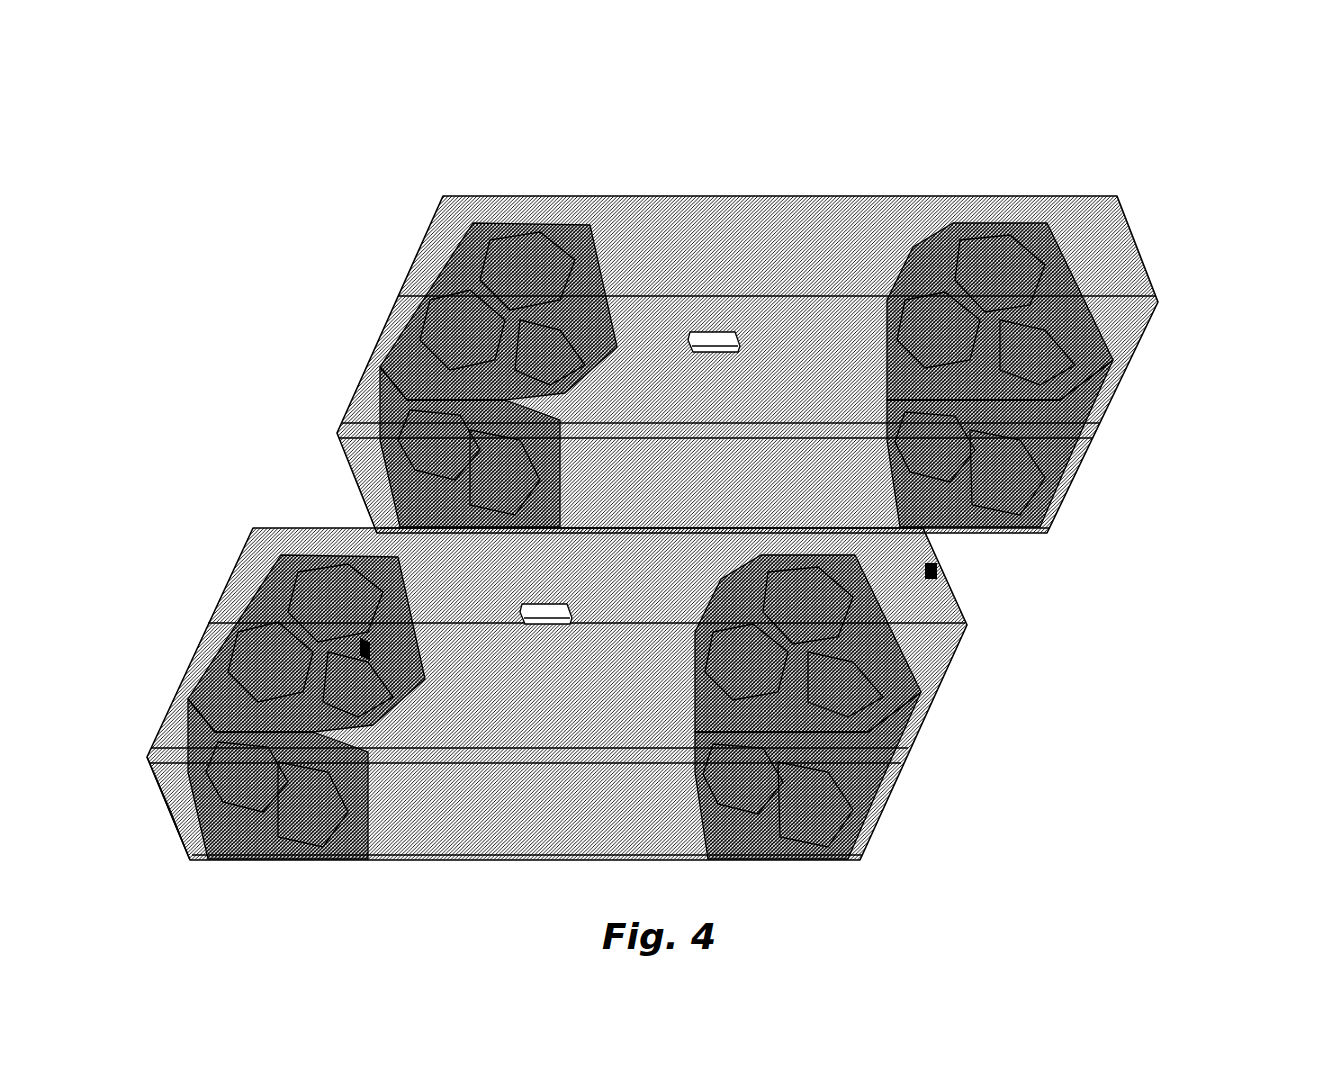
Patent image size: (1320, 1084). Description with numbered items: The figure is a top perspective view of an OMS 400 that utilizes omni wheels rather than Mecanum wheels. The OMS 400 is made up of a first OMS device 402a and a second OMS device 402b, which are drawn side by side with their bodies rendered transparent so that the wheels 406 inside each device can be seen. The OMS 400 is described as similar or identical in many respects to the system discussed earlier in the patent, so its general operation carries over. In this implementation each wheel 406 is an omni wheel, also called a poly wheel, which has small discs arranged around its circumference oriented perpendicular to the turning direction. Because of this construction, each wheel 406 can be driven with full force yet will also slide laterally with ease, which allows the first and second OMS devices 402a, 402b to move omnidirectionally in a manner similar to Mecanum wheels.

The OMS 400 is at (1180, 79).
The first OMS device 402a is at (1163, 246).
The second OMS device 402b is at (977, 716).
The omni wheel 406 is at (233, 824).